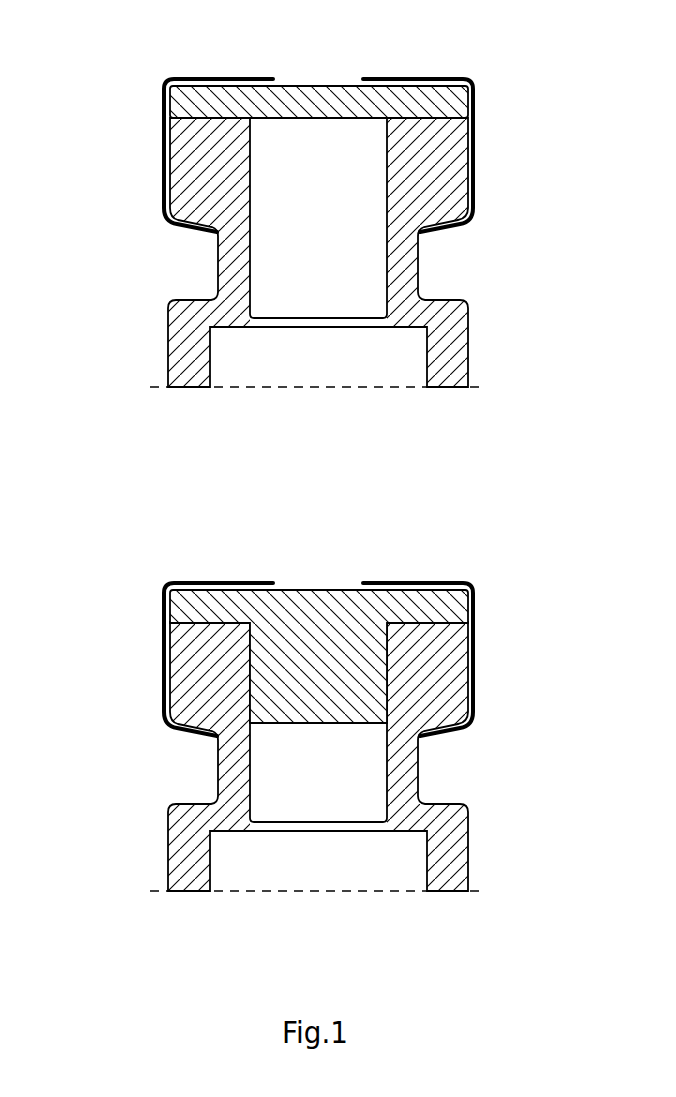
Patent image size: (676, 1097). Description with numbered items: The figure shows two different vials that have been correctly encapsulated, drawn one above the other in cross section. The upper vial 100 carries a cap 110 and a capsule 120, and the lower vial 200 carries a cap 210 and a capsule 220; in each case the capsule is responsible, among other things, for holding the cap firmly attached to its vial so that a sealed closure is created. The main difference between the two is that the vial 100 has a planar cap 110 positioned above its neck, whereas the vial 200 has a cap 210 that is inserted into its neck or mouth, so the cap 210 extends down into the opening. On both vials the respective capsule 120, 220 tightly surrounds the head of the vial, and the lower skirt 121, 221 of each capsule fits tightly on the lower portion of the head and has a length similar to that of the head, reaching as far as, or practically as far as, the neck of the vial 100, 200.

The vial 100 is at (183, 337).
The cap 110 is at (322, 85).
The capsule 120 is at (164, 168).
The lower skirt 121 is at (453, 232).
The vial 200 is at (296, 831).
The cap 210 is at (319, 612).
The capsule 220 is at (279, 712).
The lower skirt 221 is at (349, 687).